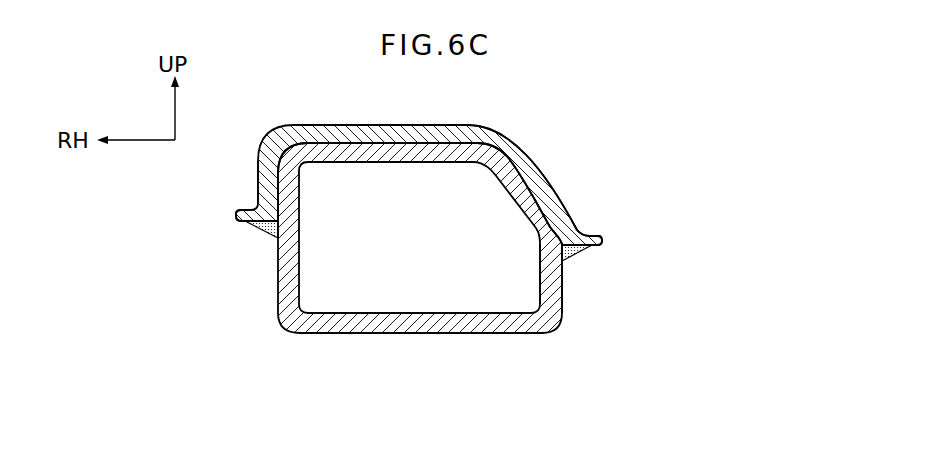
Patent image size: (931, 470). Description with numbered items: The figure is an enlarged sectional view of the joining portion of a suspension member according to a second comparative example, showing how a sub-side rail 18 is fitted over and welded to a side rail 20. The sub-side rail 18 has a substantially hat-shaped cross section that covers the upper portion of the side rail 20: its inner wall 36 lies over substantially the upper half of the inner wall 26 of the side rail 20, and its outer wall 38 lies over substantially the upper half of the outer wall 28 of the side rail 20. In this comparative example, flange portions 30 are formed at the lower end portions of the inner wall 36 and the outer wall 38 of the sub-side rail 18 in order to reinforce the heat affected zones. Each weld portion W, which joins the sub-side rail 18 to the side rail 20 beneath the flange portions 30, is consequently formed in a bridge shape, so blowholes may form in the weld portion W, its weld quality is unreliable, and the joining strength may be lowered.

The sub-side rail 18 is at (412, 122).
The side rail 20 is at (412, 335).
The inner wall 26 is at (540, 257).
The outer wall 28 is at (300, 255).
The flange portion 30 is at (237, 219).
The inner wall 36 is at (556, 180).
The outer wall 38 is at (258, 183).
The weld portion W is at (265, 237).